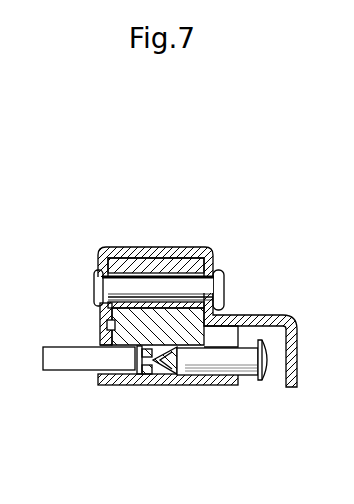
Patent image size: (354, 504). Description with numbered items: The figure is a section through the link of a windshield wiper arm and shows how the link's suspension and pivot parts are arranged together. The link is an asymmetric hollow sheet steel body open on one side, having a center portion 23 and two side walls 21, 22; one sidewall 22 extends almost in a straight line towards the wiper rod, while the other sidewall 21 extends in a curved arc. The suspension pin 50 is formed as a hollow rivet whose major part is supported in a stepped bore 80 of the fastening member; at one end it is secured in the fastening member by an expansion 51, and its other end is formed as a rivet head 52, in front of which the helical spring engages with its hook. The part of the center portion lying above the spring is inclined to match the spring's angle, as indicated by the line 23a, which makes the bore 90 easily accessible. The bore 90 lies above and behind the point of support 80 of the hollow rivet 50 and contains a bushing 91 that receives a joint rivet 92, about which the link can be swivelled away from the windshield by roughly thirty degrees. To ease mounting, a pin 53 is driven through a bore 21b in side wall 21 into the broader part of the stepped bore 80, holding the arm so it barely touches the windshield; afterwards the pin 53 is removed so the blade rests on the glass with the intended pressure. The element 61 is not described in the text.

The sidewall 21 is at (105, 317).
The bore 21b is at (102, 343).
The sidewall 22 is at (292, 338).
The center portion 23 is at (188, 252).
The inclined line of center portion 23a is at (207, 312).
The suspension pin 50 is at (190, 366).
The expansion 51 is at (153, 374).
The rivet head 52 is at (262, 360).
The pin 53 is at (63, 362).
The elastic member 61 is at (160, 265).
The stepped bore 80 is at (140, 353).
The bore 90 is at (120, 297).
The bushing 91 is at (138, 270).
The joint rivet 92 is at (128, 283).